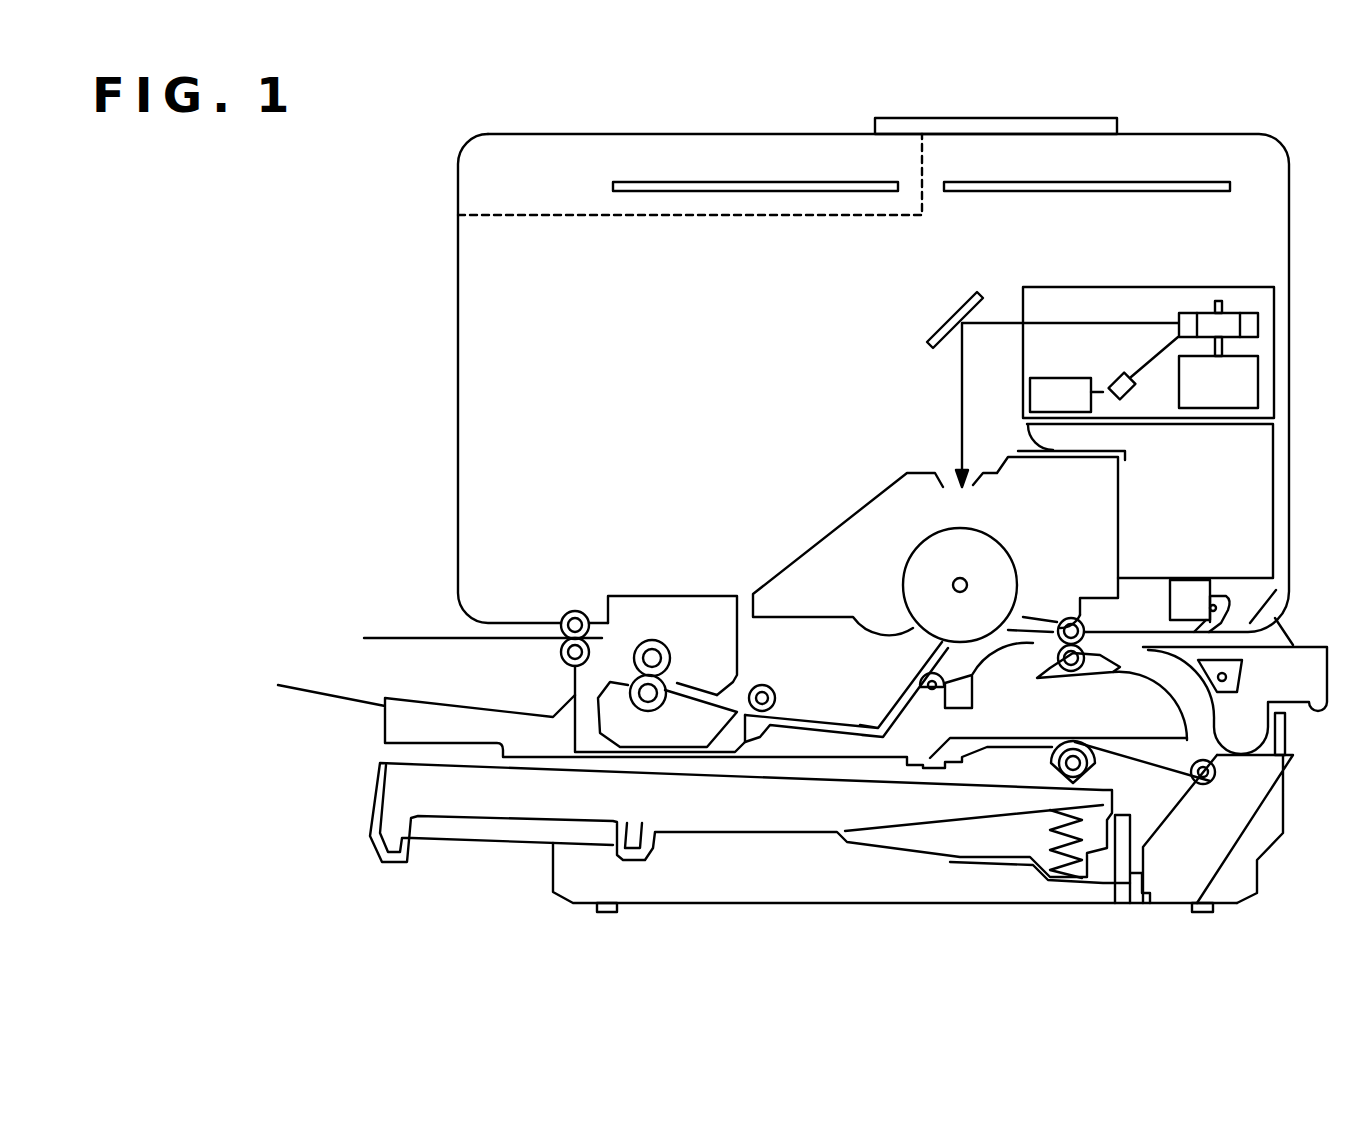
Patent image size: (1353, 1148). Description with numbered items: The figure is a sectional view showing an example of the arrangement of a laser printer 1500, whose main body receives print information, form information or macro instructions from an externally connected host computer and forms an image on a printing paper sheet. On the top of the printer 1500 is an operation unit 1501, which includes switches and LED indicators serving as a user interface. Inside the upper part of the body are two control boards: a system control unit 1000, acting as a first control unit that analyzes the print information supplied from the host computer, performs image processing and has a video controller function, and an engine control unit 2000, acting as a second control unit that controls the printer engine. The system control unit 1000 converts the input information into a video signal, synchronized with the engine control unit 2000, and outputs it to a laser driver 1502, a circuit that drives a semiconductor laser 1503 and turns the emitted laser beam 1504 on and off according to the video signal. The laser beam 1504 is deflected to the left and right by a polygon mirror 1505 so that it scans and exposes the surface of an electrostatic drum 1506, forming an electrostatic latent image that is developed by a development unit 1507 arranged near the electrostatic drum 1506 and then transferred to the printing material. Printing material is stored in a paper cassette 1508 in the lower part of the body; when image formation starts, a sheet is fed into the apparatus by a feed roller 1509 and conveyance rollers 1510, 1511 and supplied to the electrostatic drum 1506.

The printer 1500 is at (1213, 134).
The operation unit 1501 is at (978, 118).
The system control unit 1000 is at (687, 182).
The engine control unit 2000 is at (1052, 182).
The laser driver 1502 is at (1063, 392).
The semiconductor laser 1503 is at (1127, 392).
The laser beam 1504 is at (1068, 323).
The polygon mirror 1505 is at (1238, 313).
The electrostatic drum 1506 is at (1010, 556).
The development unit 1507 is at (818, 540).
The paper cassette 1508 is at (378, 808).
The feed roller 1509 is at (1052, 768).
The conveyance roller 1510 is at (1207, 784).
The conveyance roller 1511 is at (1078, 668).